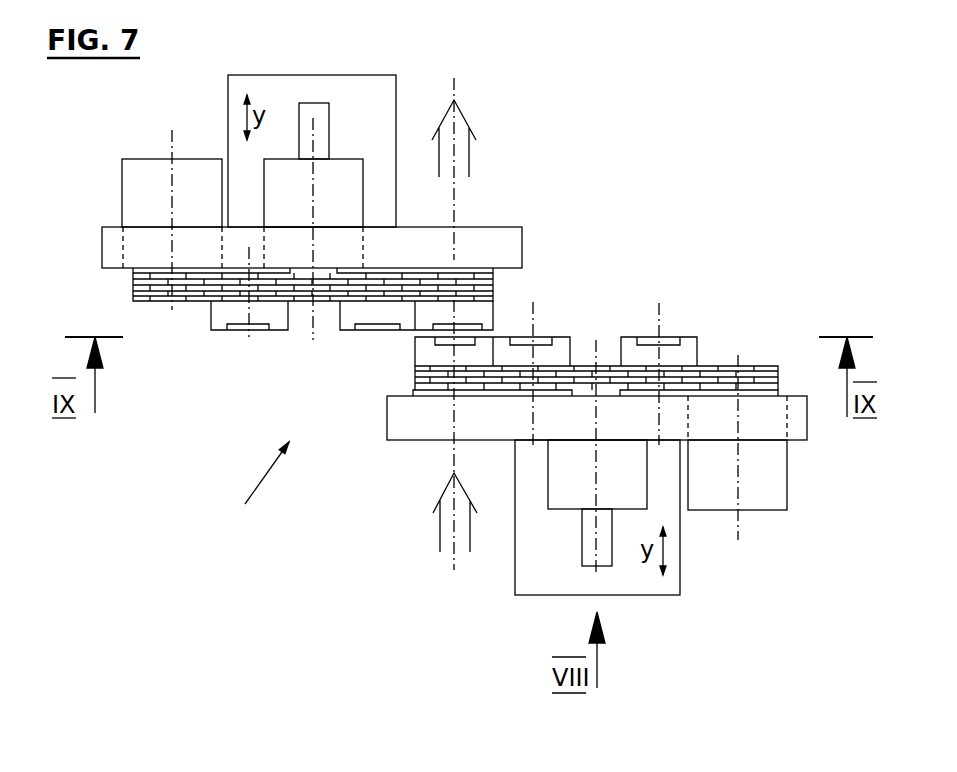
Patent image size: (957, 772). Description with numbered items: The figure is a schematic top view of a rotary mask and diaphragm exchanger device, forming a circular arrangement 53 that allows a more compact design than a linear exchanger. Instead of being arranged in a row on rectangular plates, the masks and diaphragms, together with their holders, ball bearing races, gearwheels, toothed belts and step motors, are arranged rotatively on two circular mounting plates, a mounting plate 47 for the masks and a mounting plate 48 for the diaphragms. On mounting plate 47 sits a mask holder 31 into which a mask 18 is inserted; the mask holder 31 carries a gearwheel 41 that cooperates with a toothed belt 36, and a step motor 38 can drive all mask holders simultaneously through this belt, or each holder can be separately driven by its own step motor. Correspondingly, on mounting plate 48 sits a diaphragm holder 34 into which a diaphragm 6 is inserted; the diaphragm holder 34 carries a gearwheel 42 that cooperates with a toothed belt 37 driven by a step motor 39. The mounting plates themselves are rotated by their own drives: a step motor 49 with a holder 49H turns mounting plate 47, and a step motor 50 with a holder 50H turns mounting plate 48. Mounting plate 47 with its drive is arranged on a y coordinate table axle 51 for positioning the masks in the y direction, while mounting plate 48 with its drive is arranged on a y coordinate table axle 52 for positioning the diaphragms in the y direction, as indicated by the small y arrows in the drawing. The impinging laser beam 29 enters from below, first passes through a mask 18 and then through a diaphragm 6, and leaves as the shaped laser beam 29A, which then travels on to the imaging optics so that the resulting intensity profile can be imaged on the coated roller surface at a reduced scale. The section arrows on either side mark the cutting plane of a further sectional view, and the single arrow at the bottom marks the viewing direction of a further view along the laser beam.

The step motor 39 is at (148, 177).
The holder 50H is at (305, 115).
The step motor 50 is at (332, 177).
The y coordinate table axle 52 is at (376, 125).
The shaped laser beam 29A is at (462, 146).
The circular mounting plate 48 is at (487, 240).
The gearwheel 42 is at (138, 275).
The toothed belt 37 is at (492, 282).
The diaphragm 6 is at (245, 327).
The mask 18 is at (437, 339).
The diaphragm holder 34 is at (223, 314).
The mask holder 31 is at (685, 352).
The toothed belt 36 is at (745, 378).
The gearwheel 41 is at (767, 389).
The circular mounting plate 47 is at (797, 418).
The step motor 38 is at (755, 483).
The circular arrangement 53 is at (254, 490).
The laser beam 29 is at (448, 527).
The y coordinate table axle 51 is at (528, 563).
The step motor 49 is at (574, 483).
The holder 49H is at (602, 553).